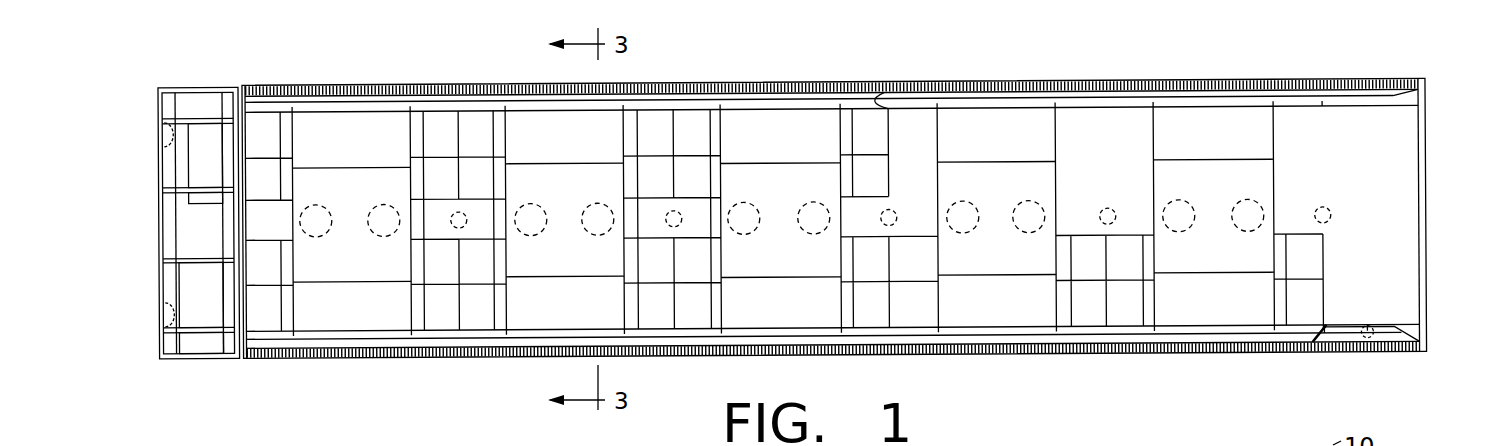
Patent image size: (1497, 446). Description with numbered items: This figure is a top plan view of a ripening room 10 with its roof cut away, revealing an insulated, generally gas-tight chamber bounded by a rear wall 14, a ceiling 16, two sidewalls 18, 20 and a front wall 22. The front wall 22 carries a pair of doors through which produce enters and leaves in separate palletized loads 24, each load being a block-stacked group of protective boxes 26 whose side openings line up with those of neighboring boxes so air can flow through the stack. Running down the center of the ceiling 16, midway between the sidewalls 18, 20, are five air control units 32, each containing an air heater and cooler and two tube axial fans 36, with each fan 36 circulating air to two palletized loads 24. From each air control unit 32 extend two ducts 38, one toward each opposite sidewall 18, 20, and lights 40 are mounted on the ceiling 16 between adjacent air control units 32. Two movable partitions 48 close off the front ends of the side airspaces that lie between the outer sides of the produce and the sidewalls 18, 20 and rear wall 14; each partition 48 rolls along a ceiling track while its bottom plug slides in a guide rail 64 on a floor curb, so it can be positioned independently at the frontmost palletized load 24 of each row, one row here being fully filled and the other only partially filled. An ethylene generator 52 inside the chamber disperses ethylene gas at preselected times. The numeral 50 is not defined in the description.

The ripening room 10 is at (1355, 63).
The rear wall 14 is at (240, 216).
The ceiling 16 is at (1412, 97).
The sidewall 18 is at (933, 352).
The sidewall 20 is at (832, 188).
The front wall 22 is at (1430, 338).
The palletized load 24 is at (899, 167).
The protective box 26 is at (472, 130).
The air control unit 32 is at (362, 265).
The tube axial fan 36 is at (533, 212).
The duct 38 is at (1010, 125).
The light 40 is at (679, 219).
The movable partition 48 is at (884, 81).
The cell panel 50 is at (444, 230).
The ethylene generator 52 is at (1375, 347).
The guide rail 64 is at (1218, 99).